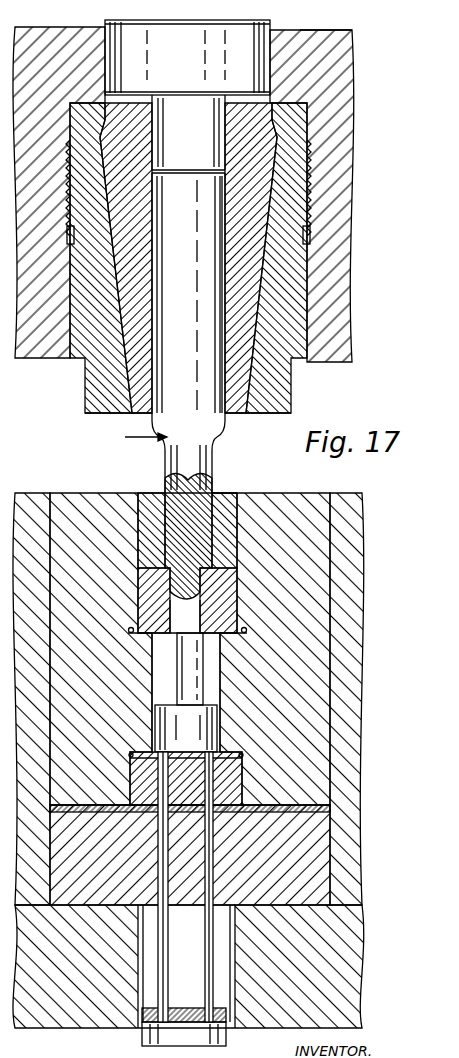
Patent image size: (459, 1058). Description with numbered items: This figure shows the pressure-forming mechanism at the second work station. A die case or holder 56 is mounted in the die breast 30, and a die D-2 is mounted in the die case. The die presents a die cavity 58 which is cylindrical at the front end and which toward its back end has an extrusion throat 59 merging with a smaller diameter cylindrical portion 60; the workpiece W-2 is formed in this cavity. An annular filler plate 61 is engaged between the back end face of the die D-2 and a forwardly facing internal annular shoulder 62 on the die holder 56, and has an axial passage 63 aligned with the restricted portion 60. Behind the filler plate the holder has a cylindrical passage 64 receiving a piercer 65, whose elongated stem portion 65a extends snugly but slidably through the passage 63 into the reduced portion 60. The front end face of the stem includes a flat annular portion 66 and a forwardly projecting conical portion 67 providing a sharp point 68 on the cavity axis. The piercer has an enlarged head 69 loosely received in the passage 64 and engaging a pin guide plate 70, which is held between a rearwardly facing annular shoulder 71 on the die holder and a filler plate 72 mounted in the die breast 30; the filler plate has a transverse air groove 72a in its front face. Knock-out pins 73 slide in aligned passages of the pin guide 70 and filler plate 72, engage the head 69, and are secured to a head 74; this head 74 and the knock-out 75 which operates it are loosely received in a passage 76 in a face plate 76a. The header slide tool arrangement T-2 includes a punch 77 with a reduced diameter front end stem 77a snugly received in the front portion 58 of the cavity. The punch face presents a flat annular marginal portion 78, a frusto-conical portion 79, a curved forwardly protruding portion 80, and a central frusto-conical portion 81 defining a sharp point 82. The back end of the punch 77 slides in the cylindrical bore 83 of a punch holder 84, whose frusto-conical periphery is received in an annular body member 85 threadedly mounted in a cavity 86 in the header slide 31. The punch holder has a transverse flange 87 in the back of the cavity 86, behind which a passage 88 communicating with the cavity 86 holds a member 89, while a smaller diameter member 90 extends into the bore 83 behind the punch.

The die breast 30 is at (347, 543).
The header slide 31 is at (278, 72).
The die case or holder 56 is at (60, 503).
The die cavity 58 is at (212, 495).
The extrusion throat 59 is at (213, 550).
The smaller diameter cylindrical portion 60 is at (215, 568).
The annular filler plate 61 is at (225, 600).
The internal annular shoulder 62 is at (142, 622).
The axial passage 63 is at (168, 592).
The cylindrical passage 64 is at (212, 680).
The piercer 65 is at (206, 652).
The elongated stem portion 65a is at (180, 690).
The flat annular portion 66 is at (170, 560).
The conical portion 67 is at (175, 545).
The sharp point 68 is at (185, 602).
The enlarged head 69 is at (206, 727).
The pin guide plate 70 is at (232, 756).
The rearwardly facing annular shoulder 71 is at (133, 775).
The filler plate 72 is at (315, 842).
The transverse air groove 72a is at (300, 808).
The knock-out pins 73 is at (160, 843).
The head 74 is at (228, 1018).
The knock-out 75 is at (148, 1035).
The passage 76 is at (140, 957).
The face plate 76a is at (330, 967).
The punch 77 is at (203, 303).
The reduced diameter front end stem 77a is at (214, 455).
The flat annular marginal portion 78 is at (180, 493).
The frusto-conical portion 79 is at (175, 482).
The curved forwardly protruding portion 80 is at (195, 490).
The central frusto-conical portion 81 is at (215, 535).
The sharp point 82 is at (170, 507).
The cylindrical bore 83 is at (228, 290).
The punch holder 84 is at (240, 382).
The annular body member 85 is at (292, 330).
The cavity 86 is at (318, 235).
The transverse flange 87 is at (310, 106).
The passage 88 is at (348, 36).
The member 89 is at (127, 38).
The smaller diameter member 90 is at (215, 139).
The header slide tool arrangement T-2 is at (128, 433).
The width W-2 is at (172, 528).
The die D-2 is at (218, 493).